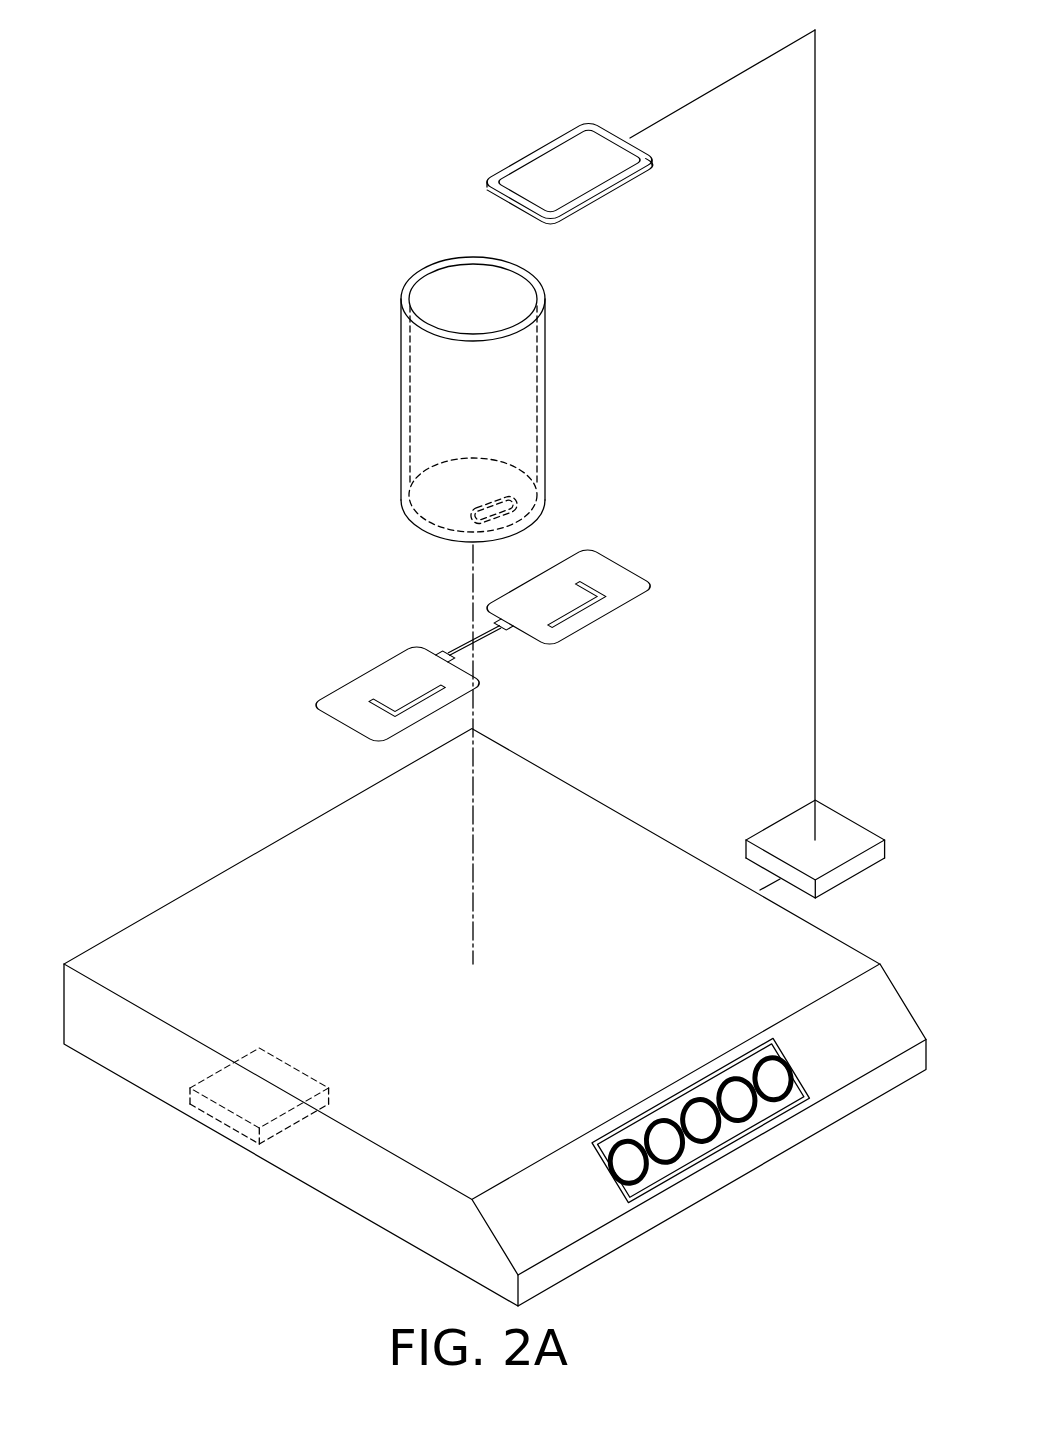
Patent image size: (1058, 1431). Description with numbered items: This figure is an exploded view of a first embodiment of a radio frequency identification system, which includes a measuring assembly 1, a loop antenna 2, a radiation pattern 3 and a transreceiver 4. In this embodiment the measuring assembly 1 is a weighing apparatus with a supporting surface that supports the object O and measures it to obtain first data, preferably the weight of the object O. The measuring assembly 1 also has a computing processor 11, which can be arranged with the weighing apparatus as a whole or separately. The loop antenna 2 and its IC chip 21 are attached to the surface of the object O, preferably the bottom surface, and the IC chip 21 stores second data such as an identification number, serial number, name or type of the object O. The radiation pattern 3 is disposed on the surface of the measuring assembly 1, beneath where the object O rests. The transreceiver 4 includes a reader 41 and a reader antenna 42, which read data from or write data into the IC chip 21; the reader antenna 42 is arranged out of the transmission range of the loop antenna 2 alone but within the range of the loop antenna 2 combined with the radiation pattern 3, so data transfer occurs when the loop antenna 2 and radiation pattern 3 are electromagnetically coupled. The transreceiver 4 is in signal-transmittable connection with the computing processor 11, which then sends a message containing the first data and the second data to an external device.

The measuring assembly 1 is at (668, 1234).
The computing processor 11 is at (215, 1122).
The loop antenna 2 is at (554, 479).
The IC chip 21 is at (509, 501).
The radiation pattern 3 is at (350, 698).
The transreceiver 4 is at (918, 0).
The reader 41 is at (838, 828).
The reader antenna 42 is at (610, 125).
The object O is at (422, 386).